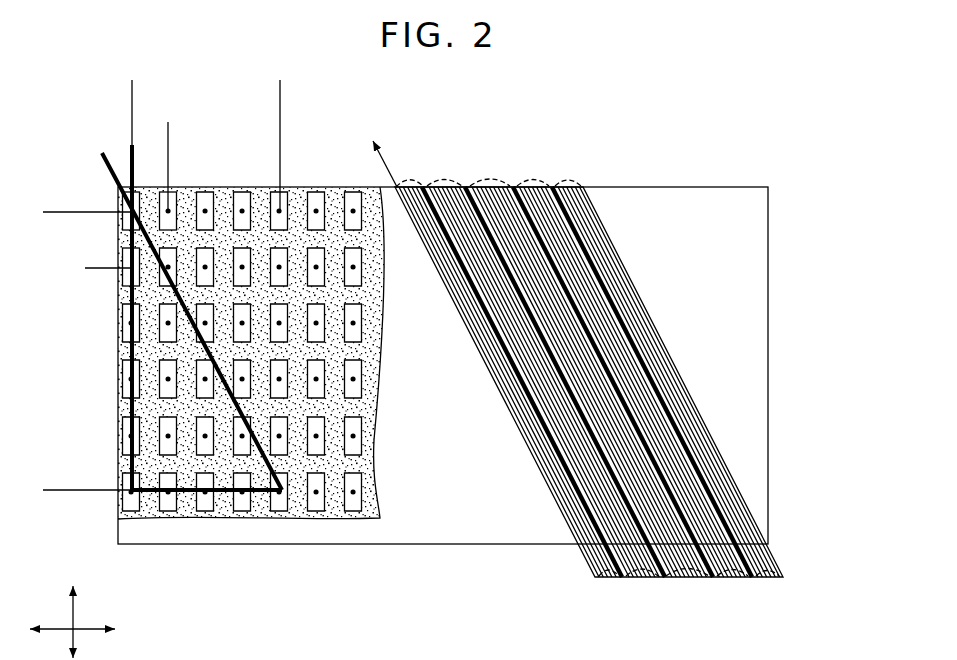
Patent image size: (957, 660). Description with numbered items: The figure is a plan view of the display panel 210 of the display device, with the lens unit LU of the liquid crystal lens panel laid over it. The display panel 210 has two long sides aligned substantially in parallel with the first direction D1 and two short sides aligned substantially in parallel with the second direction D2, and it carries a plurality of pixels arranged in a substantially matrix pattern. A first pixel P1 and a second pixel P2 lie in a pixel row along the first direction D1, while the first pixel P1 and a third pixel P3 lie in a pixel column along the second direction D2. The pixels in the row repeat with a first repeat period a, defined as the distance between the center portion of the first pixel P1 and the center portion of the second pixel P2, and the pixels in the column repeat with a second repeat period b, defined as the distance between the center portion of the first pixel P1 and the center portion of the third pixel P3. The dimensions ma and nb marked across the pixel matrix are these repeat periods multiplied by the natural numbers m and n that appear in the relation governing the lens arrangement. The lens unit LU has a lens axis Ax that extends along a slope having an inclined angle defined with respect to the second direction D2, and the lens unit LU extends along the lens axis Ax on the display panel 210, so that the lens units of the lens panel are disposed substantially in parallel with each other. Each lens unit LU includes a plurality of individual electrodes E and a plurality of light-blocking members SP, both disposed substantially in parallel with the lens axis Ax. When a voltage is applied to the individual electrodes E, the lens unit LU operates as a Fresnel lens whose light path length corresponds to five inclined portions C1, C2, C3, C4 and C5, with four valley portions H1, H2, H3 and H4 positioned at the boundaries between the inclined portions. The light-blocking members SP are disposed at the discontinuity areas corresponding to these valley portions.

The display panel 210 is at (245, 545).
The first pixel P1 is at (127, 207).
The second pixel P2 is at (168, 209).
The third pixel P3 is at (128, 273).
The first repeat period multiplied by m ma is at (280, 85).
The first repeat period a is at (132, 128).
The second repeat period b is at (92, 212).
The second repeat period multiplied by n nb is at (50, 212).
The individual electrode E is at (604, 228).
The light-blocking member SP is at (654, 383).
The first valley portion H1 is at (622, 578).
The second valley portion H2 is at (662, 578).
The third valley portion H3 is at (713, 578).
The fourth valley portion H4 is at (752, 578).
The first inclined portion C1 is at (405, 178).
The second inclined portion C2 is at (441, 178).
The third inclined portion C3 is at (483, 178).
The fourth inclined portion C4 is at (531, 178).
The fifth inclined portion C5 is at (565, 178).
The lens axis Ax is at (387, 158).
The lens unit LU is at (504, 158).
The first direction D1 is at (87, 630).
The second direction D2 is at (73, 608).